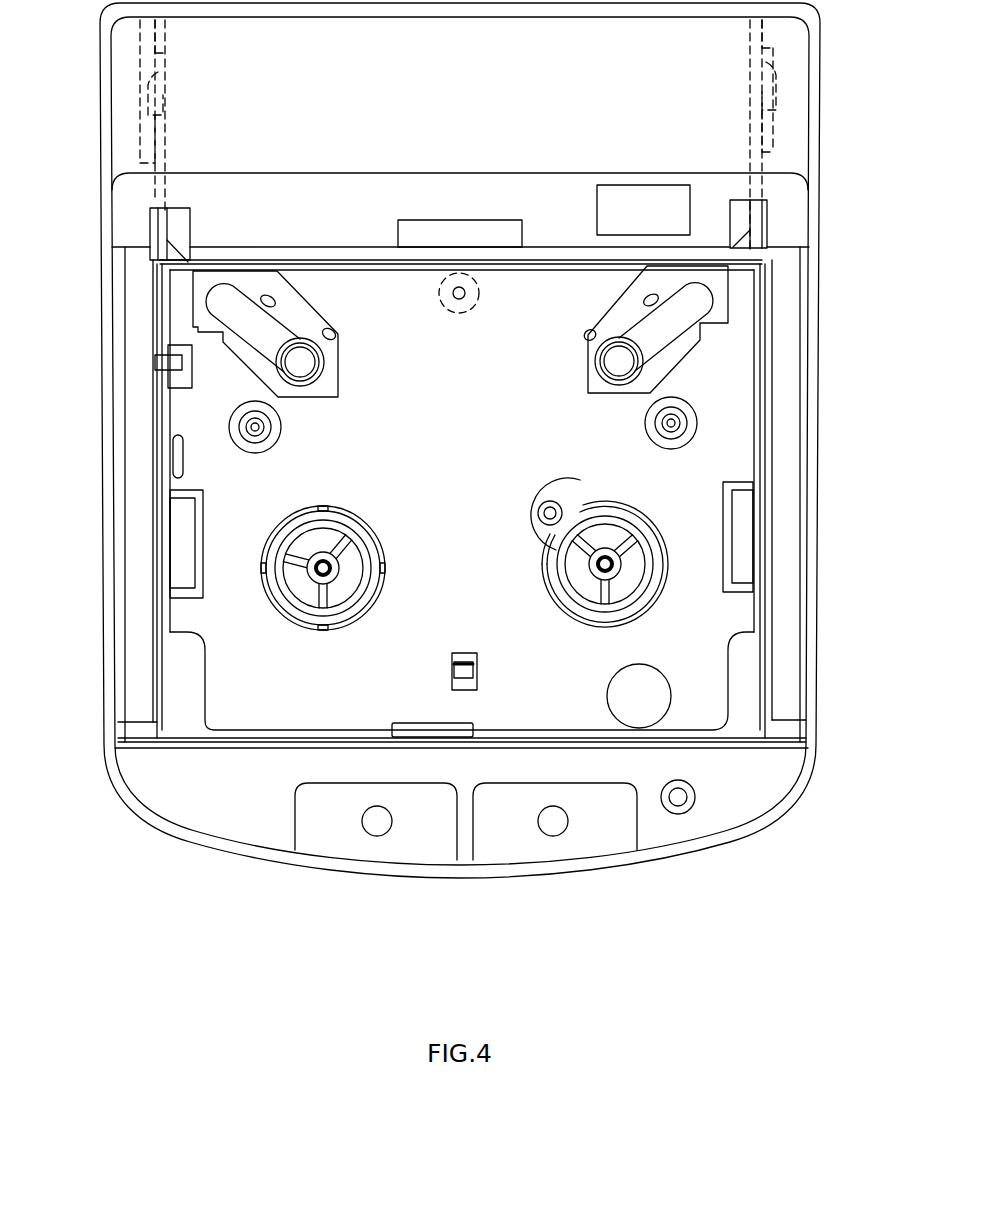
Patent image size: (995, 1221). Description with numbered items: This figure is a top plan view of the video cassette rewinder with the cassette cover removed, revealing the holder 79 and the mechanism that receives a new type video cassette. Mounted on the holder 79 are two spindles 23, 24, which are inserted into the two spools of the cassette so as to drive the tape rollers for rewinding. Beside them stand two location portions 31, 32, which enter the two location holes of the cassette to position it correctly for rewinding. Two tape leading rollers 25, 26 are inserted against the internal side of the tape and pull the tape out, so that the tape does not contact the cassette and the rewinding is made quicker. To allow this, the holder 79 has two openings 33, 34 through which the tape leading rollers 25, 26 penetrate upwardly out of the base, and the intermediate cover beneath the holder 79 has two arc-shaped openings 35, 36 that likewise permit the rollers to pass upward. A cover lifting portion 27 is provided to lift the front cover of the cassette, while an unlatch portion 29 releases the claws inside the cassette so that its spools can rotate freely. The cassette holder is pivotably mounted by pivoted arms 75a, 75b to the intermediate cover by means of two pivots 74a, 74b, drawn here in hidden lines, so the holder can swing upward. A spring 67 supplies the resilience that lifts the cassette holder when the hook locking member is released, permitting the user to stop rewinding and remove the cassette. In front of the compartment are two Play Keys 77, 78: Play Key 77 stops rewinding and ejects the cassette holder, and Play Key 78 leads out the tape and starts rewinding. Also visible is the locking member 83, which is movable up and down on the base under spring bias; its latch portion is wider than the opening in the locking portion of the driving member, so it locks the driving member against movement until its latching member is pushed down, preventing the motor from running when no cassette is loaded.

The spindle 23 is at (340, 538).
The spindle 24 is at (585, 580).
The tape leading roller 25 is at (308, 366).
The tape leading roller 26 is at (603, 365).
The cover lifting portion 27 is at (182, 362).
The unlatch portion 29 is at (477, 670).
The location portion 31 is at (267, 432).
The location portion 32 is at (660, 426).
The opening 33 is at (337, 337).
The opening 34 is at (586, 337).
The arc-shaped opening 35 is at (277, 305).
The arc-shaped opening 36 is at (653, 303).
The spring 67 is at (459, 313).
The pivot 74a is at (147, 76).
The pivot 74b is at (780, 62).
The pivoted arm 75a is at (167, 125).
The pivoted arm 75b is at (750, 133).
The Play Key 77 is at (343, 843).
The Play Key 78 is at (608, 838).
The holder 79 is at (312, 703).
The locking member 83 is at (538, 500).